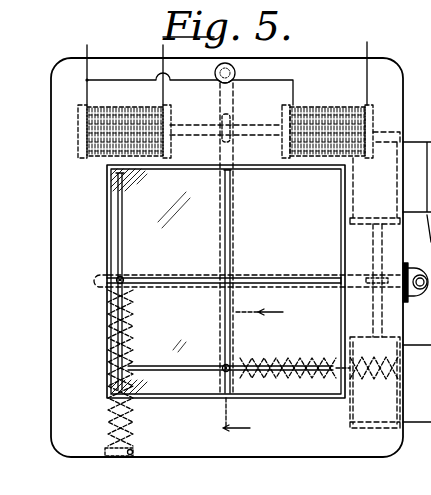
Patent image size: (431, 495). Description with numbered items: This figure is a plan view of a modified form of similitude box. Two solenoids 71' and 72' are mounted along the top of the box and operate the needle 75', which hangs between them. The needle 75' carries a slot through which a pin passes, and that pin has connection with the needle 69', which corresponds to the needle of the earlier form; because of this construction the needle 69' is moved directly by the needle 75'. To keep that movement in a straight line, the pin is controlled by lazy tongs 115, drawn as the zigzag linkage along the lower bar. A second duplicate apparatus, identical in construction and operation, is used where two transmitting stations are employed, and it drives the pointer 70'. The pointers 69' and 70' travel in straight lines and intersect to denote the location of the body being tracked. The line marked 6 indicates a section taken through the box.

The solenoid 72' is at (124, 120).
The solenoid 71' is at (327, 117).
The needle 75' is at (226, 239).
The needle 69' is at (254, 281).
The pointer 70' is at (224, 259).
The lazy tongs 115 is at (268, 360).
The section line 6- 6 is at (250, 371).